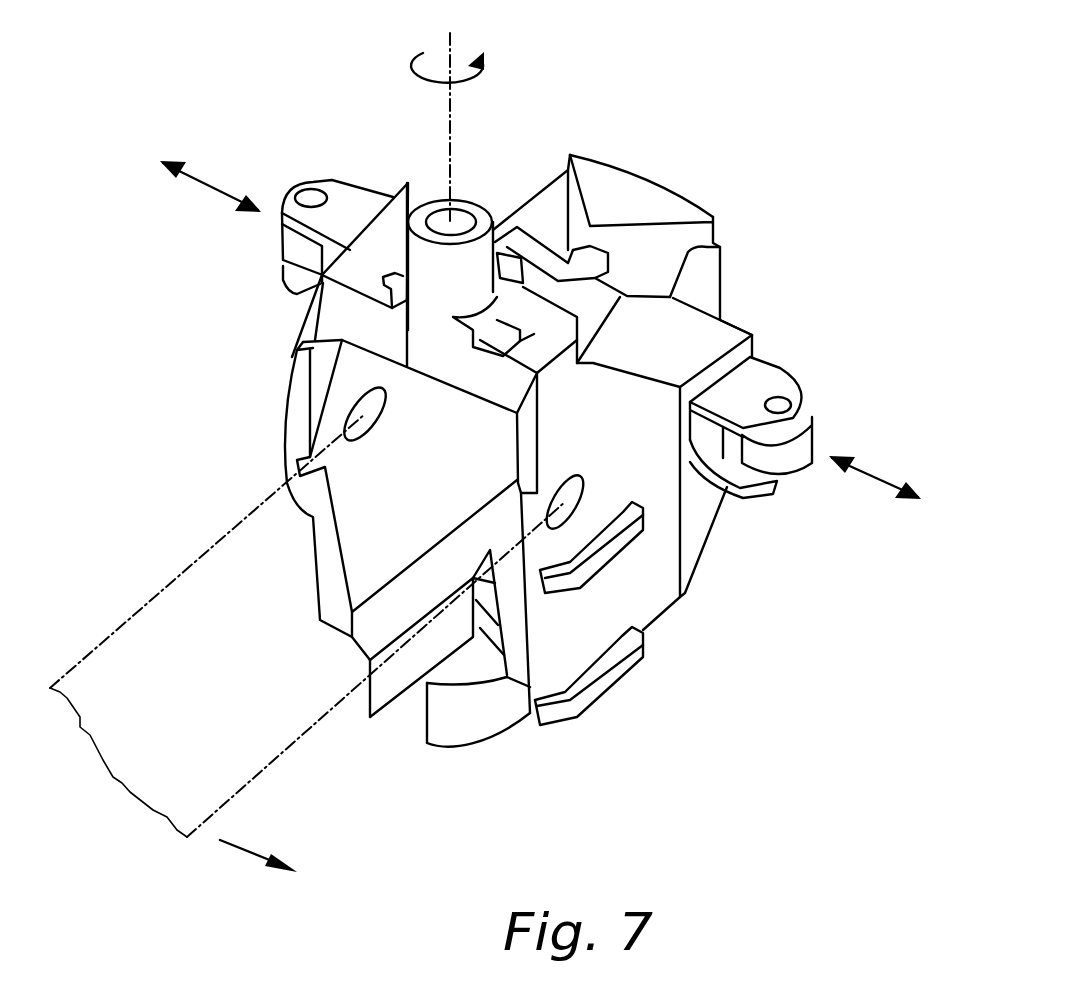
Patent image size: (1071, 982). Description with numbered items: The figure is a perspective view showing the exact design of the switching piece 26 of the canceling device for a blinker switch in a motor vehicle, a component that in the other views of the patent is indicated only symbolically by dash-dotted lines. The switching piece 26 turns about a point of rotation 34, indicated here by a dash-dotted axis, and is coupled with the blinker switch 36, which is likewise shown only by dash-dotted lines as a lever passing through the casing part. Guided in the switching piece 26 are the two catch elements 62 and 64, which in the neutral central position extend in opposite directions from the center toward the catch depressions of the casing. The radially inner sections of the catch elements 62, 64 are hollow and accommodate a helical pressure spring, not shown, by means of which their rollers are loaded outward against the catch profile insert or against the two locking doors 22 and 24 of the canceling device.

The locking door 22 is at (288, 240).
The locking door 24 is at (805, 443).
The switching piece 26 is at (756, 126).
The point of rotation 34 is at (452, 140).
The blinker switch 36 is at (150, 587).
The catch element 62 is at (348, 197).
The catch element 64 is at (762, 380).